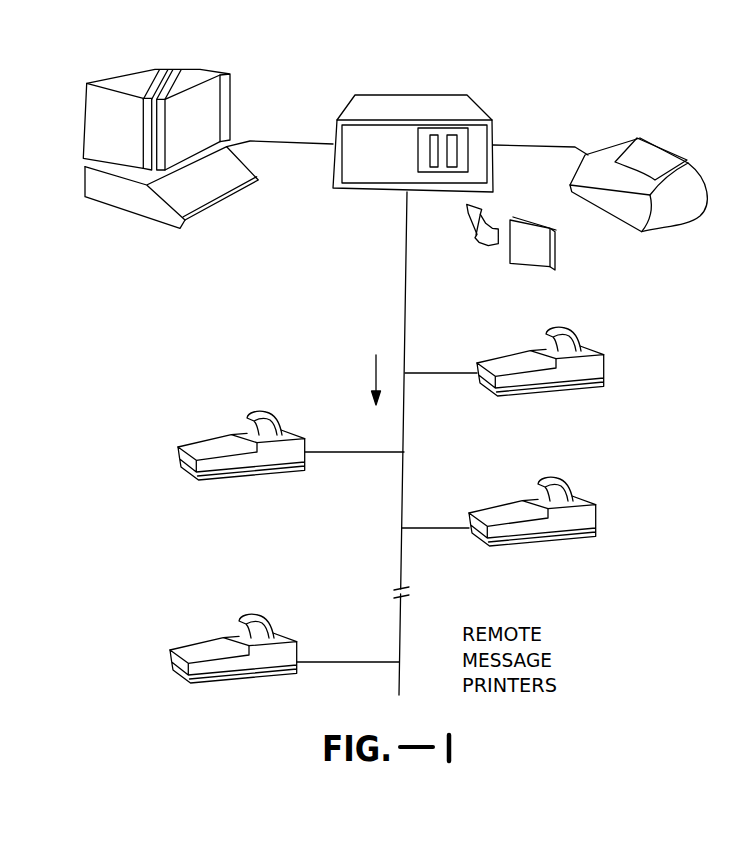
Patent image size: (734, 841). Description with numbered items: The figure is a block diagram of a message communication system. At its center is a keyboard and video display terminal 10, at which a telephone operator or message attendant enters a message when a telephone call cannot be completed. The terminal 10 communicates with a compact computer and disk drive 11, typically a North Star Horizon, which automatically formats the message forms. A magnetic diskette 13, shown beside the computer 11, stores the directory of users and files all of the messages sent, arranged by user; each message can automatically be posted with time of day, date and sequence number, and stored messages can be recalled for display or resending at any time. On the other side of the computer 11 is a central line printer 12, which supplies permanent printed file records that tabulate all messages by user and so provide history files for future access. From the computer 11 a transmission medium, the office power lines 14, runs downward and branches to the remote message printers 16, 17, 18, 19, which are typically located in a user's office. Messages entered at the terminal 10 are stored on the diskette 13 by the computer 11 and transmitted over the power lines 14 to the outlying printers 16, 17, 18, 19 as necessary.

The keyboard and video display terminal 10 is at (187, 70).
The compact computer and disk drive 11 is at (468, 112).
The central line printer 12 is at (687, 172).
The magnetic diskette 13 is at (533, 243).
The office power lines 14 is at (407, 278).
The remote message printer 16 is at (265, 460).
The remote message printer 17 is at (267, 665).
The remote message printer 18 is at (580, 380).
The remote message printer 19 is at (565, 530).